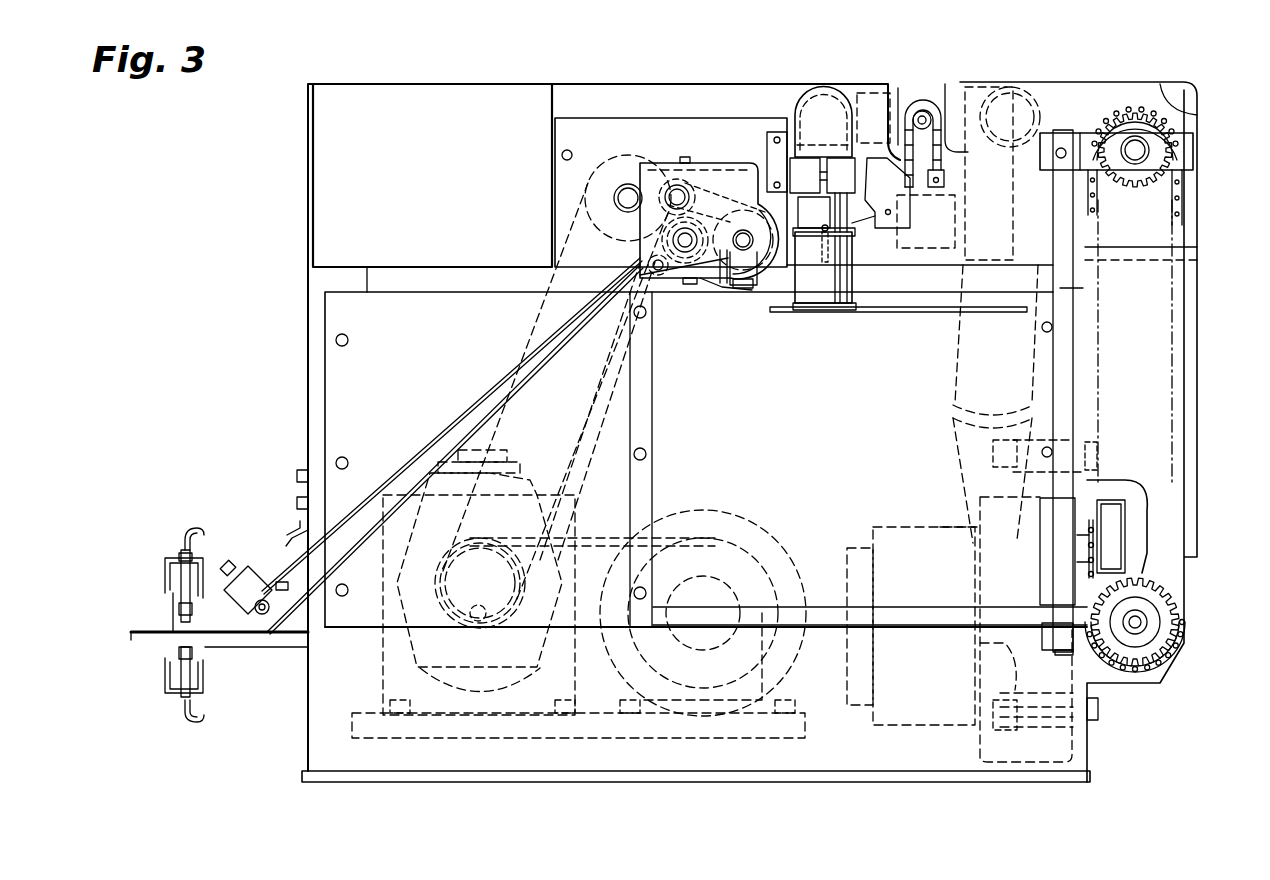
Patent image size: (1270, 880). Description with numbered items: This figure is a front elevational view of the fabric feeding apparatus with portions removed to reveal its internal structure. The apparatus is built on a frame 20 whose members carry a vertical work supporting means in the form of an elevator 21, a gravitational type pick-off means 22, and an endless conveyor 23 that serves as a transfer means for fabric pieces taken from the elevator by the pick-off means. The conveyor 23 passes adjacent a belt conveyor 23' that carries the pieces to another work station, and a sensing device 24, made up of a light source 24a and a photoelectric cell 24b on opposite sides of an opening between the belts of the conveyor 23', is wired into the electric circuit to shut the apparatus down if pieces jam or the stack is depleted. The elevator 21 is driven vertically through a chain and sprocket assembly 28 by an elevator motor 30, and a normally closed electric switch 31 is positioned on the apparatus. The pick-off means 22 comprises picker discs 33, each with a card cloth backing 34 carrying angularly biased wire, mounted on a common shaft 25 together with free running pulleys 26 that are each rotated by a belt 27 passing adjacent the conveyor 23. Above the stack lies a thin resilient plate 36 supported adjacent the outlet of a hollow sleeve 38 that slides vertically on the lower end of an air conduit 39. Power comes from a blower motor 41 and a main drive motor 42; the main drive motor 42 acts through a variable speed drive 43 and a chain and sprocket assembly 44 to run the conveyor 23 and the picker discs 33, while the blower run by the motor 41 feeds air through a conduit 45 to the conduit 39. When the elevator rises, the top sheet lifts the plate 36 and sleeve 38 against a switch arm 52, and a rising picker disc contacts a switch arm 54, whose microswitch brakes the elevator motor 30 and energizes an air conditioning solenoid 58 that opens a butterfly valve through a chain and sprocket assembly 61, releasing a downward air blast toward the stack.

The frame 20 is at (298, 340).
The elevator 21 is at (903, 626).
The pick-off means 22 is at (757, 178).
The endless conveyor 23 is at (533, 498).
The belt conveyor 23' is at (204, 653).
The sensing device 24 is at (172, 548).
The light source 24a is at (192, 660).
The photoelectric cell 24b is at (205, 570).
The common shaft 25 is at (727, 252).
The free running pulleys 26 is at (765, 280).
The belt 27 is at (680, 185).
The chain and sprocket assembly 28 is at (1132, 112).
The elevator motor 30 is at (1200, 99).
The electric switch 31 is at (1110, 522).
The picker discs 33 is at (720, 283).
The card cloth backing 34 is at (743, 288).
The resilient plate 36 is at (920, 312).
The hollow sleeve 38 is at (853, 280).
The air conduit 39 is at (823, 92).
The blower motor 41 is at (895, 527).
The main drive motor 42 is at (728, 514).
The variable speed drive 43 is at (578, 502).
The chain and sprocket assembly 44 is at (530, 318).
The conduit 45 is at (955, 385).
The switch arm 52 is at (857, 224).
The switch arm 54 is at (822, 175).
The air conditioning solenoid 58 is at (917, 252).
The chain and sprocket assembly 61 is at (910, 100).